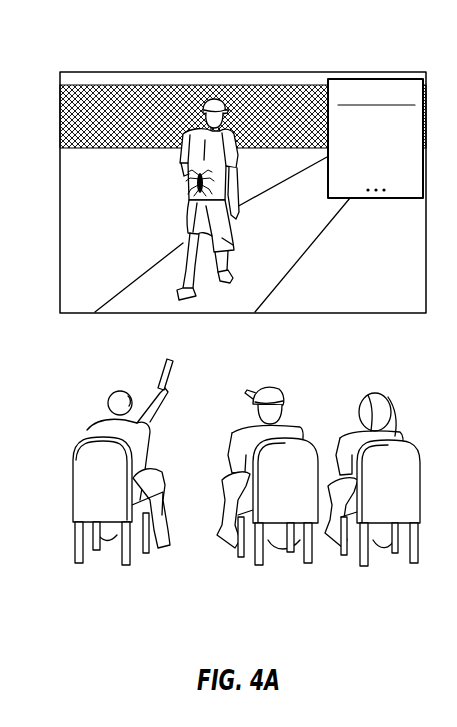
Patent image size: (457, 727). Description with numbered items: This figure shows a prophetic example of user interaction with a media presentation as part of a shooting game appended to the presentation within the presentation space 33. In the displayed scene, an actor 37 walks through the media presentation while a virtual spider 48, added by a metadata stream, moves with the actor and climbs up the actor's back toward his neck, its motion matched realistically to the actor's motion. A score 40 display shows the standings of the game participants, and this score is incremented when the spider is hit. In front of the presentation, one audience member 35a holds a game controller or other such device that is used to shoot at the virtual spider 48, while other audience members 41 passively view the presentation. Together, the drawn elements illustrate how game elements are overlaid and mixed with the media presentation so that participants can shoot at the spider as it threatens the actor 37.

The display screen 33 is at (99, 61).
The actor 37 is at (237, 219).
The virtual spider 48 is at (193, 184).
The score 40 is at (373, 200).
The audience member 35a is at (97, 422).
The other audience members 41 is at (298, 515).